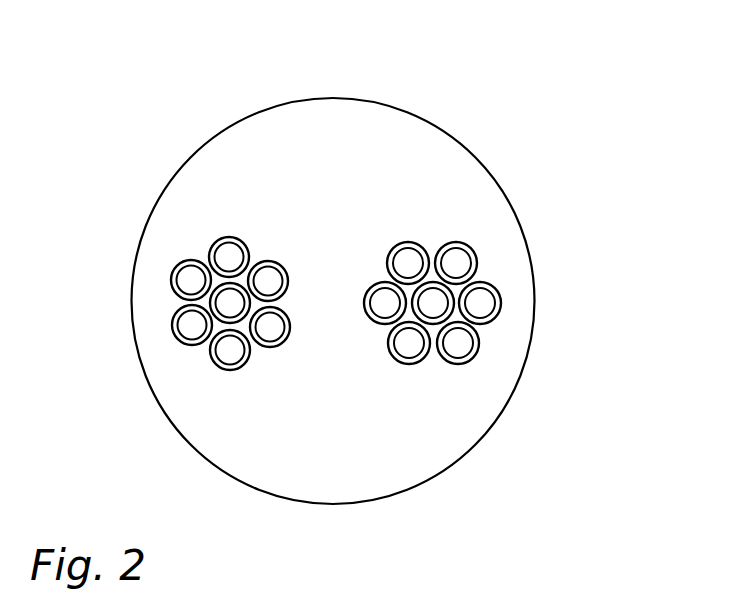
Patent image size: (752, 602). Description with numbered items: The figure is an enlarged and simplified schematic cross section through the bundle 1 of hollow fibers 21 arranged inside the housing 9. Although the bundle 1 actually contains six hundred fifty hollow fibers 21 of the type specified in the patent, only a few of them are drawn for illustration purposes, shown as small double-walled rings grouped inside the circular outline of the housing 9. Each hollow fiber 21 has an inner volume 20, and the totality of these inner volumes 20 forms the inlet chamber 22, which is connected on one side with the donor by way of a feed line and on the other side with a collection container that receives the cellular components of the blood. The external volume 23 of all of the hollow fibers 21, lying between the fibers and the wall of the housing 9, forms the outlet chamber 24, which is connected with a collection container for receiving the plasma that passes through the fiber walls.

The bundle 1 is at (338, 157).
The housing 9 is at (465, 149).
The inner volumes 20 is at (458, 264).
The hollow fibers 21 is at (493, 320).
The inlet chamber 22 is at (227, 257).
The external volume 23 is at (222, 330).
The outlet chamber 24 is at (388, 408).